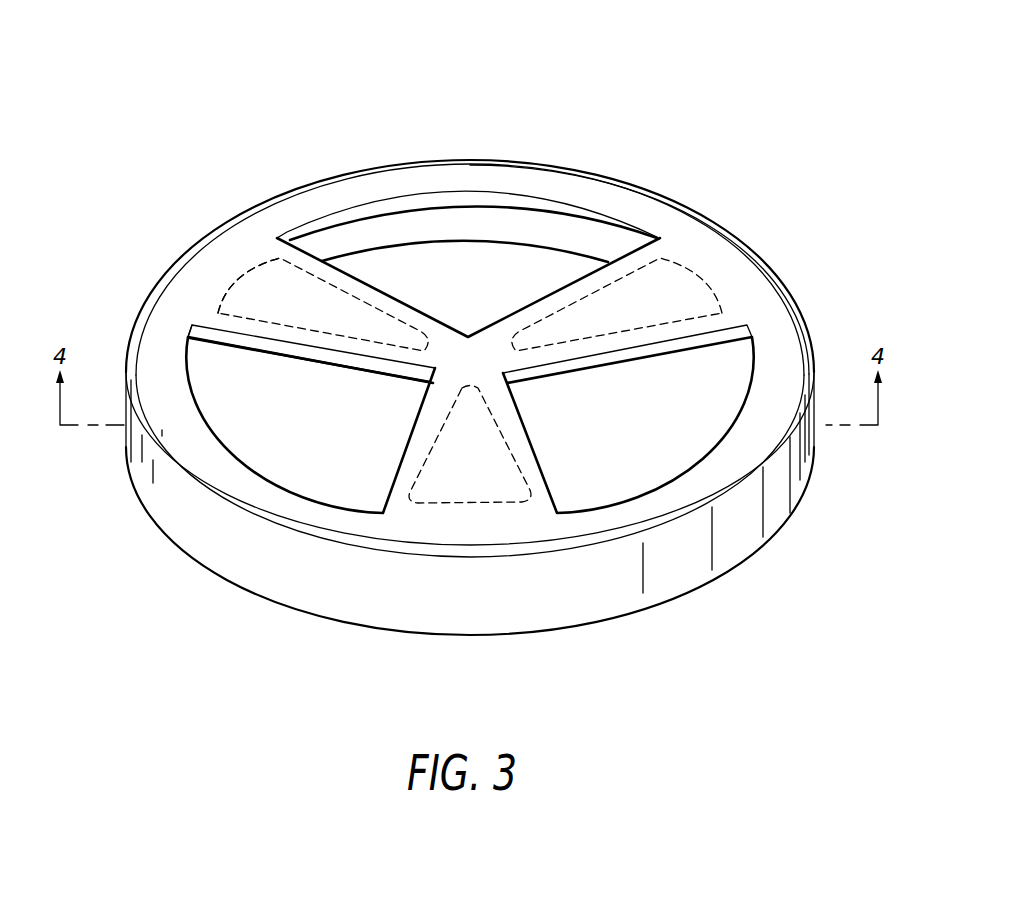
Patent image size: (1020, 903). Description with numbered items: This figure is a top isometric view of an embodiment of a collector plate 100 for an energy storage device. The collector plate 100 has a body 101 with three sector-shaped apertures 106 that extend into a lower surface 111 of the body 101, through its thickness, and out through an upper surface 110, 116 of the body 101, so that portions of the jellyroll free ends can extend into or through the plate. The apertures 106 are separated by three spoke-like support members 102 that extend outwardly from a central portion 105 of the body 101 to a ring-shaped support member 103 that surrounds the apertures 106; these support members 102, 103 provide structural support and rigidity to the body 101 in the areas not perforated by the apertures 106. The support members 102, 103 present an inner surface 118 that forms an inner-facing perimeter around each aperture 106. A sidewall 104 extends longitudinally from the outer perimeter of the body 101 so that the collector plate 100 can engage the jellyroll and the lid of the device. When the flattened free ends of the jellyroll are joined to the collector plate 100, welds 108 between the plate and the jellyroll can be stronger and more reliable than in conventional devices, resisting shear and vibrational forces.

The collector plate 100 is at (648, 84).
The body 101 is at (676, 218).
The support members 102 is at (283, 270).
The support member 103 is at (583, 517).
The sidewall 104 is at (745, 518).
The central portion 105 is at (463, 352).
The apertures 106 is at (405, 208).
The welds 108 is at (242, 287).
The upper surface 110 is at (447, 527).
The lower surface 111 is at (372, 384).
The upper surface 116 is at (218, 313).
The inner surface 118 is at (525, 202).